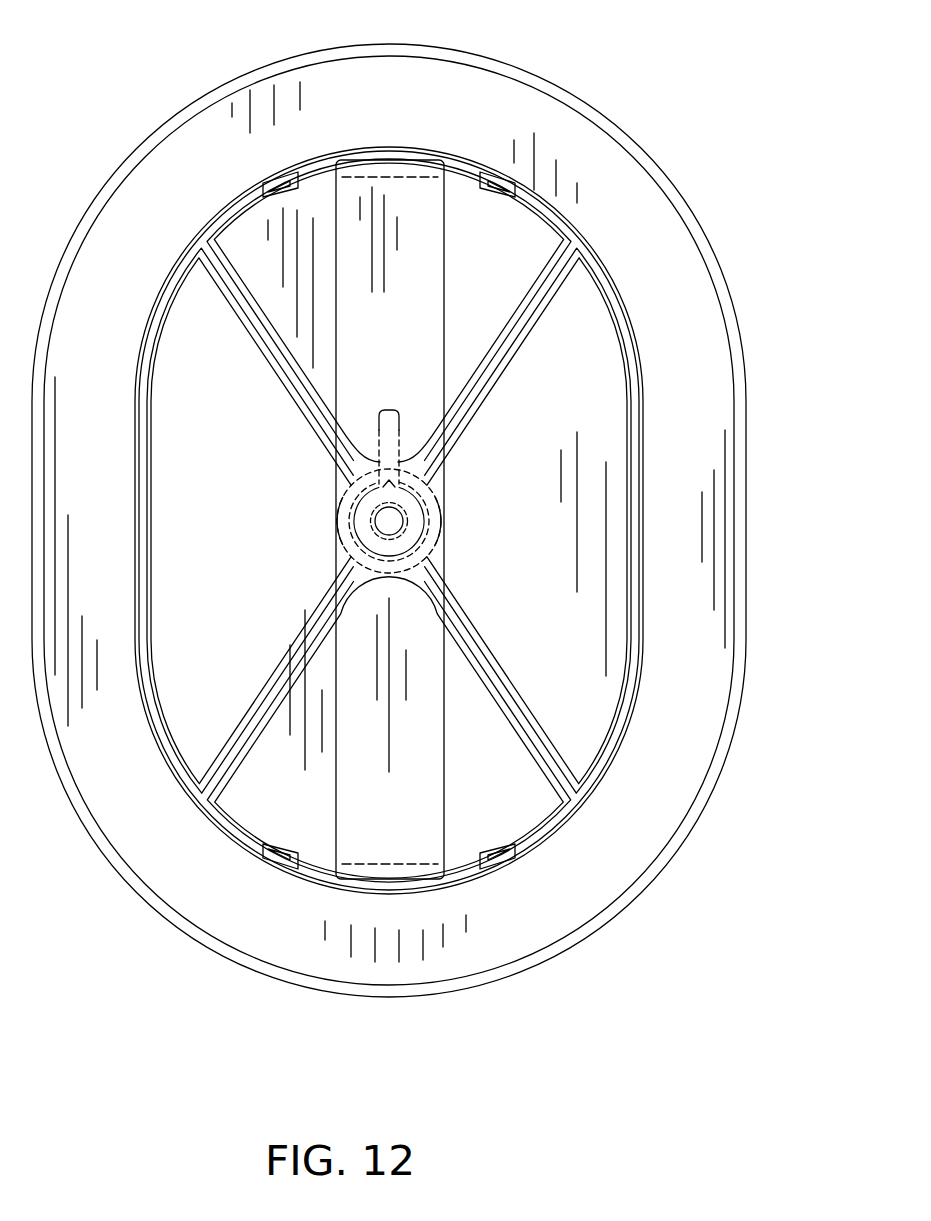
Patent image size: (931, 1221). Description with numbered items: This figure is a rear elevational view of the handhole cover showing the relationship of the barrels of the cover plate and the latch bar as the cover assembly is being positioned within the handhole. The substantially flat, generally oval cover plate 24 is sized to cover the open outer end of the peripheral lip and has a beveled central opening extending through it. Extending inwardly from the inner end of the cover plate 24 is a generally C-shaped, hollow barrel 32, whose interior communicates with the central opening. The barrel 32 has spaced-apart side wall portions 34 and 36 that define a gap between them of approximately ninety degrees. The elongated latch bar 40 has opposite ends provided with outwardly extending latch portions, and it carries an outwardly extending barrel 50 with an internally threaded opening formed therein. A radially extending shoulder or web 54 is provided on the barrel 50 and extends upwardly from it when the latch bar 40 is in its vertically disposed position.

The cover plate 24 is at (628, 102).
The barrel 32 is at (434, 494).
The side wall portion 34 is at (405, 461).
The side wall portion 36 is at (334, 512).
The latch bar 40 is at (352, 791).
The barrel 50 is at (425, 520).
The shoulder or web 54 is at (400, 426).